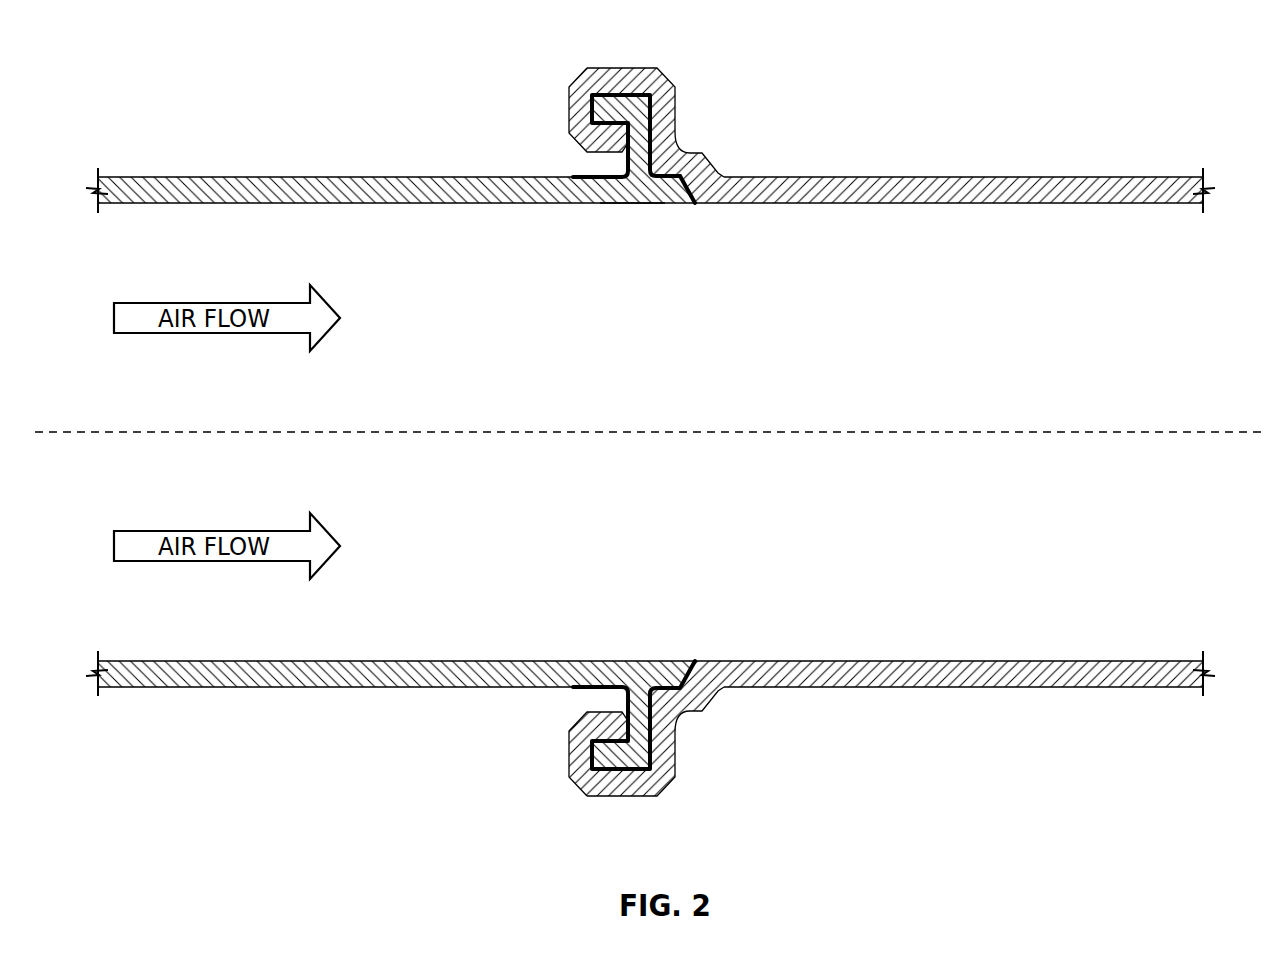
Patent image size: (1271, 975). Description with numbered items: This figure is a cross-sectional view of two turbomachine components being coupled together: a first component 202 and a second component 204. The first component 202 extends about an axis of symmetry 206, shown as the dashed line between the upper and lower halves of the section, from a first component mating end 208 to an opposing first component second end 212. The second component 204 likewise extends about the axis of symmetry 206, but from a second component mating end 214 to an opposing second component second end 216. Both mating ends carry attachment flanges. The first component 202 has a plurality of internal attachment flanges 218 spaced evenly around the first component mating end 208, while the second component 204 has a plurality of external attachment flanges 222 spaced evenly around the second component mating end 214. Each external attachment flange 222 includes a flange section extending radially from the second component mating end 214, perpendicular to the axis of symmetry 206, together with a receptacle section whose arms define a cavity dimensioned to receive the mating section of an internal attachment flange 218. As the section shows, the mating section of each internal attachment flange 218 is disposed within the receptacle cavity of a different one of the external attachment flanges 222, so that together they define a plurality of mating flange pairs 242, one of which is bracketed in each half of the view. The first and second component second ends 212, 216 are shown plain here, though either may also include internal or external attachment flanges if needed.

The first component 202 is at (397, 187).
The second component 204 is at (880, 187).
The axis of symmetry 206 is at (507, 431).
The first component mating end 208 is at (633, 210).
The first component second end 212 is at (122, 210).
The second component mating end 214 is at (707, 210).
The second component second end 216 is at (1187, 210).
The internal attachment flange 218 is at (626, 88).
The external attachment flange 222 is at (680, 106).
The mating flange pair 242 is at (610, 401).